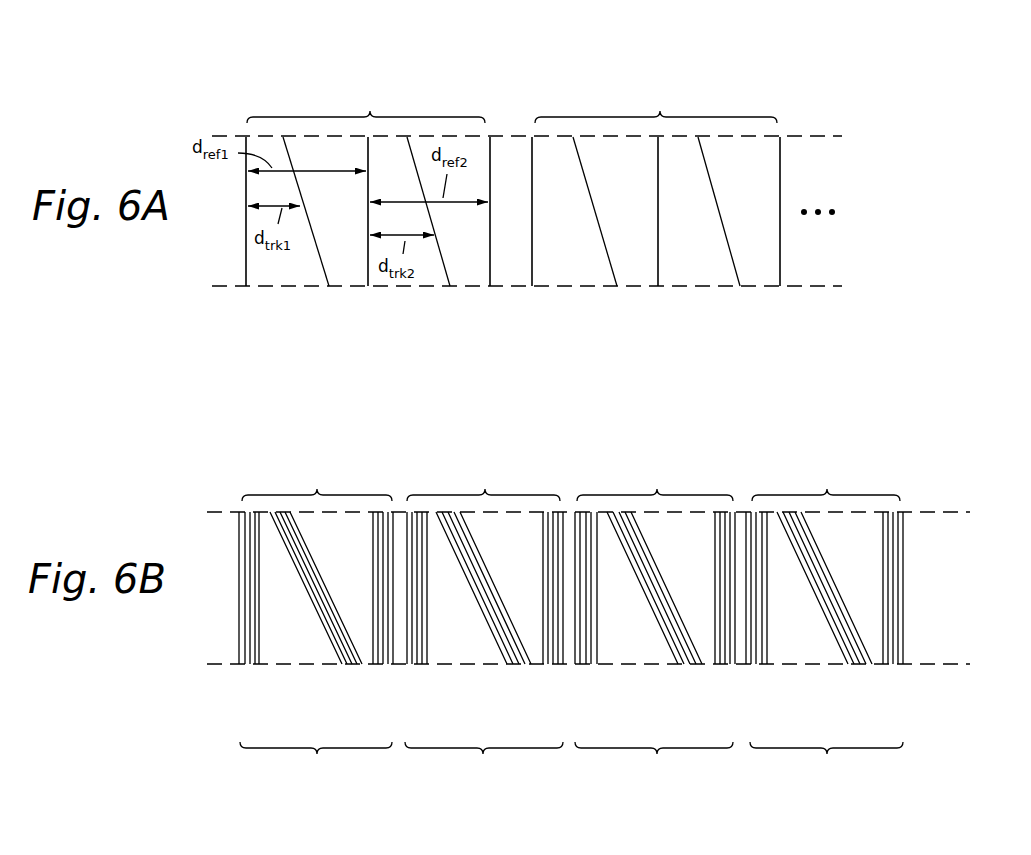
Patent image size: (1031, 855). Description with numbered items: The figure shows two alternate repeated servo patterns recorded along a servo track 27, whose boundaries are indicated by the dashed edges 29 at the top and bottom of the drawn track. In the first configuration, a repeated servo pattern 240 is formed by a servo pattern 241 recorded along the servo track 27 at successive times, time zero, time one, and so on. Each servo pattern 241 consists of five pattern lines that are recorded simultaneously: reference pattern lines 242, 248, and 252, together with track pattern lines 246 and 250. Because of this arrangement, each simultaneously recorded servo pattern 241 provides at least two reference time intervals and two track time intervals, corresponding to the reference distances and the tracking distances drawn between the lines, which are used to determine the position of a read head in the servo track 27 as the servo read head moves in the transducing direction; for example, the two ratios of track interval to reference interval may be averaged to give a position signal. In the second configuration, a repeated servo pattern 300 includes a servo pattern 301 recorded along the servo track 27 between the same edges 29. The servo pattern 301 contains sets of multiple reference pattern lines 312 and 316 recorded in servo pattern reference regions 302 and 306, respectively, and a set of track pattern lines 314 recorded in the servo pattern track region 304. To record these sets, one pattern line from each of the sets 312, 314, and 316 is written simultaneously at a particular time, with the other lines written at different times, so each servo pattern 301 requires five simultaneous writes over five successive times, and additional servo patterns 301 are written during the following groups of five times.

In FIG. 6A, the repeated servo pattern 240 is at (580, 61).
In FIG. 6A, the servo pattern 241 is at (267, 101).
In FIG. 6A, the reference pattern line 242 is at (247, 259).
In FIG. 6A, the track pattern line 246 is at (307, 192).
In FIG. 6A, the reference pattern line 248 is at (367, 268).
In FIG. 6A, the track pattern line 250 is at (447, 268).
In FIG. 6A, the reference pattern line 252 is at (491, 268).
In FIG. 6A, the servo track 27 is at (839, 267).
In FIG. 6B, the servo track 27 is at (971, 650).
In FIG. 6A, the servo band edges 29 is at (821, 136).
In FIG. 6B, the servo band edges 29 is at (933, 512).
In FIG. 6B, the repeated servo pattern 300 is at (575, 437).
In FIG. 6B, the servo pattern 301 is at (571, 483).
In FIG. 6B, the servo pattern reference region 302 is at (216, 624).
In FIG. 6B, the servo pattern track region 304 is at (321, 609).
In FIG. 6B, the servo pattern reference region 306 is at (361, 624).
In FIG. 6B, the reference pattern lines 312 is at (236, 558).
In FIG. 6B, the track pattern lines 314 is at (314, 559).
In FIG. 6B, the reference pattern lines 316 is at (371, 539).